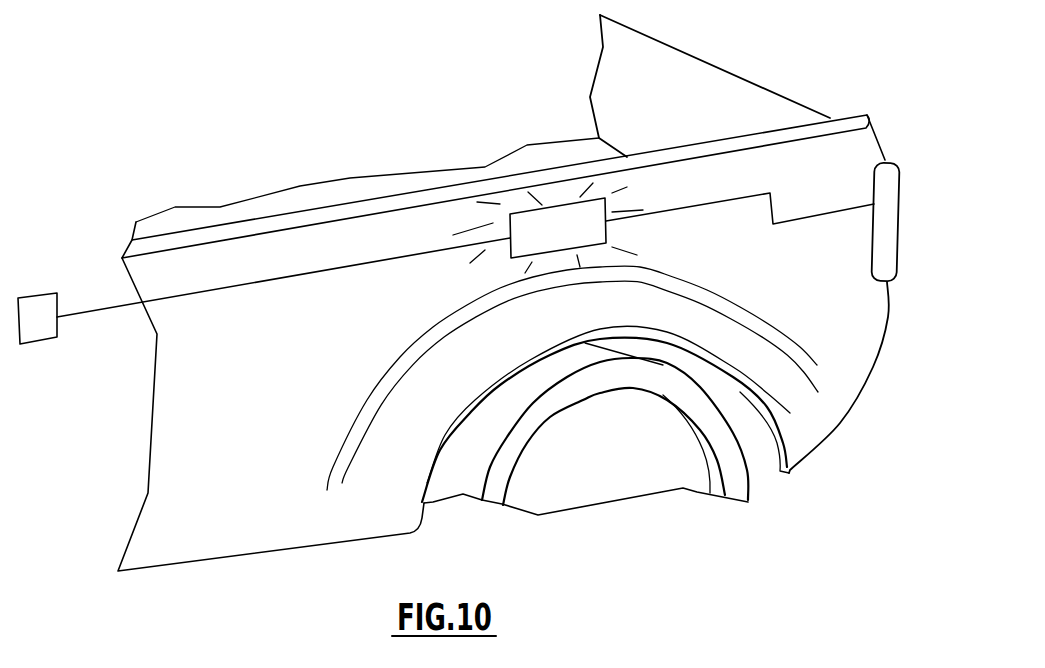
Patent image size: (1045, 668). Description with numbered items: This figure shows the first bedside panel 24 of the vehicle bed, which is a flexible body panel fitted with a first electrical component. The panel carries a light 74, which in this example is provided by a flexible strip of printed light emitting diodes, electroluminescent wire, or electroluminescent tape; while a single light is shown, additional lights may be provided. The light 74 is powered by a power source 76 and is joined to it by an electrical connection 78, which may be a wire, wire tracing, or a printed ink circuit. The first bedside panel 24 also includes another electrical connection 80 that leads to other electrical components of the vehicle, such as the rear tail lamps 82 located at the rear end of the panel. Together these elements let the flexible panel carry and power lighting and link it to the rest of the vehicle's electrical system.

The first bedside panel 24 is at (192, 561).
The light 74 is at (543, 232).
The power source 76 is at (34, 298).
The electrical connection 78 is at (118, 308).
The electrical connection 80 is at (720, 200).
The rear tail lamps 82 is at (888, 178).